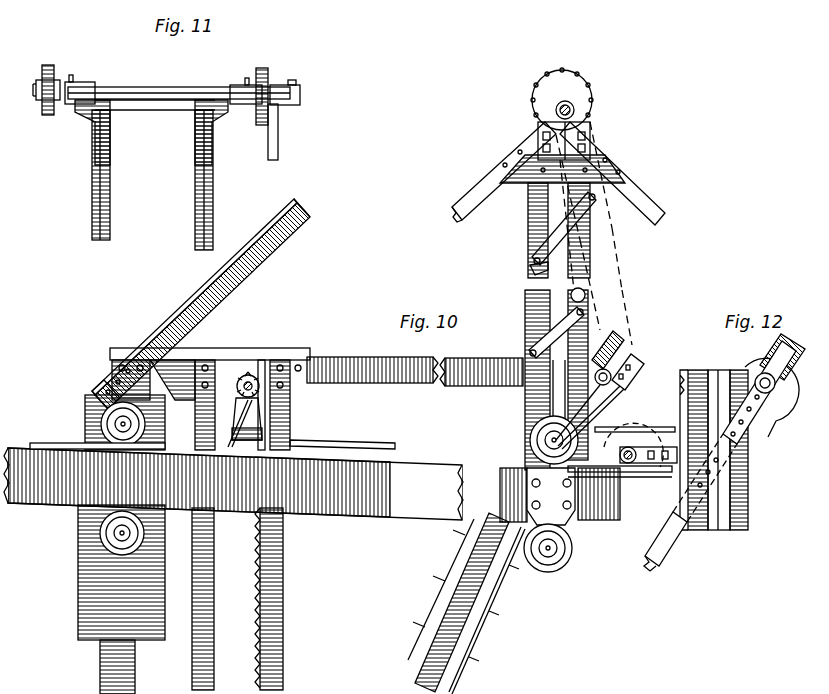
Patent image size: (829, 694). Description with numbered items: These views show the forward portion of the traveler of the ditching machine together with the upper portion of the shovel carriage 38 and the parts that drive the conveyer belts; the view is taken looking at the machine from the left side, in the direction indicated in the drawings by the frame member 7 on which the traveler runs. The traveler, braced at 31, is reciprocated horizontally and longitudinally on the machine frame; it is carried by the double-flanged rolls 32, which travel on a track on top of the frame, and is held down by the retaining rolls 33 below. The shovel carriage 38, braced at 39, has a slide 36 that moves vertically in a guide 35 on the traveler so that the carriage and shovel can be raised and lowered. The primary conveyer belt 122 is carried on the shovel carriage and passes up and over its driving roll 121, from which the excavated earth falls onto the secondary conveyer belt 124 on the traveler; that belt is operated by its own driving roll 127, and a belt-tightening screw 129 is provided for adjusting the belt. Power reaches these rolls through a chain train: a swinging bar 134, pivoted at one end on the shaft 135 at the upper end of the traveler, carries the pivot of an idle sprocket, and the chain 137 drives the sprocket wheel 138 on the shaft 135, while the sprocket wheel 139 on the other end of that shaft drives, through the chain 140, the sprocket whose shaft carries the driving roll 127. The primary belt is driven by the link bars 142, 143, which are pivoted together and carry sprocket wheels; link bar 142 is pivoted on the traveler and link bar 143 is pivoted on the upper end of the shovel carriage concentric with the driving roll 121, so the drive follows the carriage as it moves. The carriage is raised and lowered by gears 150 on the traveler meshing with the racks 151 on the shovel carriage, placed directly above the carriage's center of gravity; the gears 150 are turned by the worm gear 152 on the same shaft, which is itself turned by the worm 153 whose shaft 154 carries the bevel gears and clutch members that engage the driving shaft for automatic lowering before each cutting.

In FIG. 10, the main frame beam 7 is at (50, 500).
In FIG. 11, the brace 31 is at (278, 132).
In FIG. 10, the double-flanged rolls 32 is at (95, 428).
In FIG. 10, the retaining rolls 33 is at (100, 540).
In FIG. 11, the guide 35 is at (92, 202).
In FIG. 10, the slide 36 is at (100, 662).
In FIG. 10, the shovel carriage 38 is at (380, 350).
In FIG. 10, the brace 39 is at (458, 606).
In FIG. 10, the driving roll 121 is at (612, 340).
In FIG. 12, the driving roll 121 is at (748, 366).
In FIG. 10, the primary conveyer belt 122 is at (495, 618).
In FIG. 12, the primary conveyer belt 122 is at (720, 456).
In FIG. 10, the secondary conveyer belt 124 is at (600, 520).
In FIG. 10, the driving roll 127 is at (632, 440).
In FIG. 10, the belt-tightening screw 129 is at (618, 348).
In FIG. 12, the belt-tightening screw 129 is at (775, 380).
In FIG. 11, the swinging bar 134 is at (70, 108).
In FIG. 11, the shaft 135 is at (178, 80).
In FIG. 10, the chain 137 is at (660, 232).
In FIG. 11, the sprocket wheel 138 is at (48, 65).
In FIG. 11, the sprocket wheel 139 is at (265, 82).
In FIG. 10, the chain 140 is at (622, 290).
In FIG. 10, the link bar 142 is at (640, 478).
In FIG. 10, the link bar 143 is at (636, 364).
In FIG. 10, the gears 150 is at (252, 374).
In FIG. 10, the racks 151 is at (262, 610).
In FIG. 10, the worm gear 152 is at (258, 420).
In FIG. 10, the worm 153 is at (265, 432).
In FIG. 10, the shaft 154 is at (395, 445).